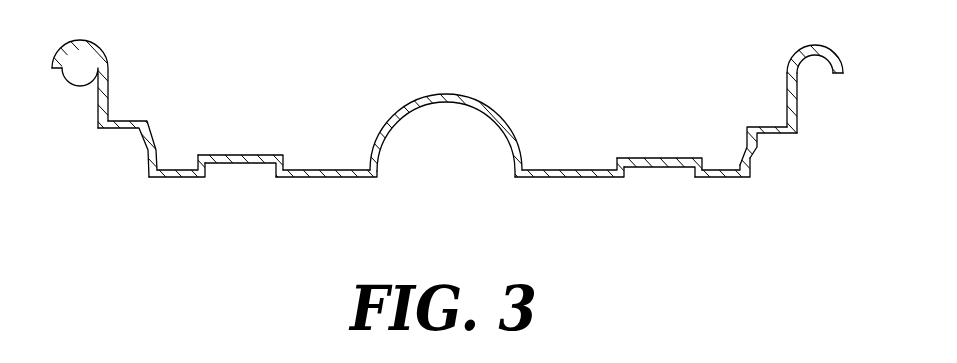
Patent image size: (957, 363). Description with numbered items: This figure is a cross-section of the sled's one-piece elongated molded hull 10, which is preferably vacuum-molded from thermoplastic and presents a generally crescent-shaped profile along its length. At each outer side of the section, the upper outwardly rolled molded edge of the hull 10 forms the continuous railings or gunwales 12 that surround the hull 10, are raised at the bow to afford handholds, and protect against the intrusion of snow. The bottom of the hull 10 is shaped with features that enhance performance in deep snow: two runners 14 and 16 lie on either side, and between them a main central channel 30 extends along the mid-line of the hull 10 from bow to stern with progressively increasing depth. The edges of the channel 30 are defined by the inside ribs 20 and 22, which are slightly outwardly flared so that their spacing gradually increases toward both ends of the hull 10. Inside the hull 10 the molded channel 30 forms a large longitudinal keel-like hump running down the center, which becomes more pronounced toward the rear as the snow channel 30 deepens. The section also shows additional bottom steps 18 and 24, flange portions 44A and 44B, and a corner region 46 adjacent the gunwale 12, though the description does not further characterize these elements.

The hull 10 is at (98, 91).
The gunwales 12 is at (842, 71).
The runner 14 is at (225, 163).
The runner 16 is at (638, 167).
The first step portion 18 is at (173, 177).
The inside rib 20 is at (297, 177).
The inside rib 22 is at (535, 178).
The fourth step portion 24 is at (712, 178).
The main central channel 30 is at (462, 106).
The first flange 44A is at (110, 135).
The second flange 44B is at (769, 135).
The corner / stem portion 46 is at (793, 132).